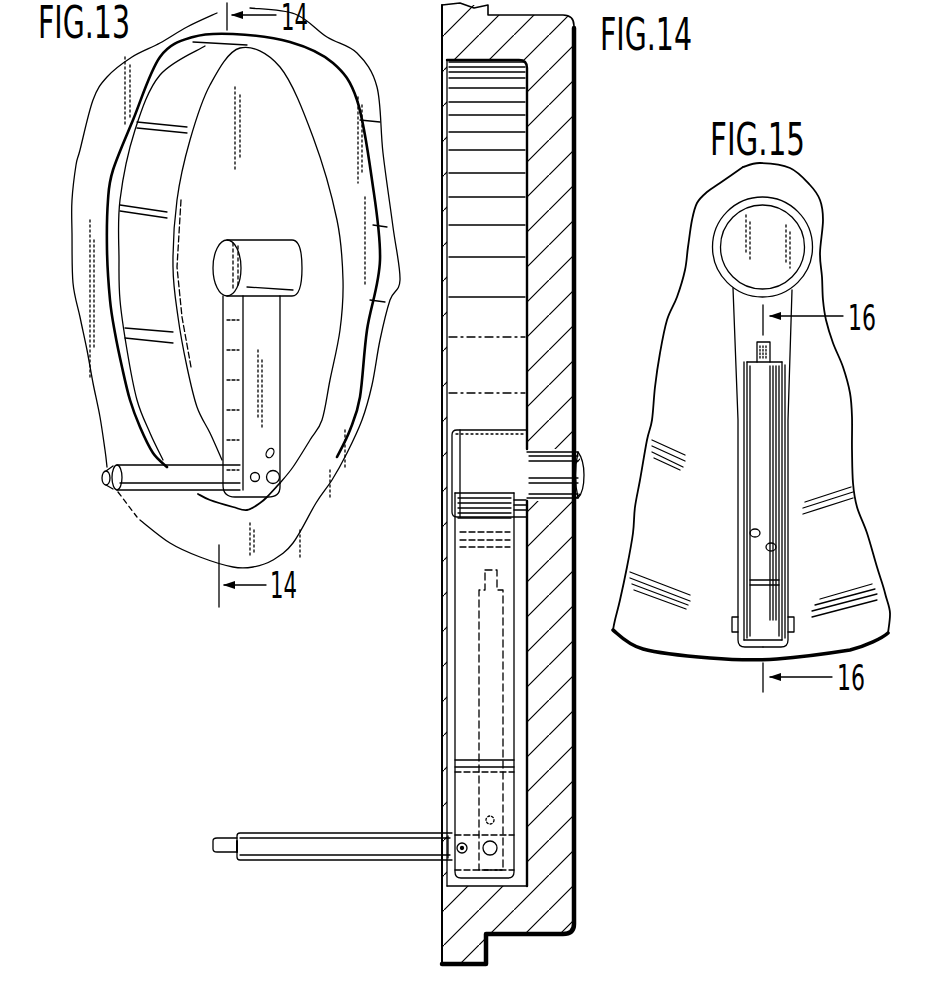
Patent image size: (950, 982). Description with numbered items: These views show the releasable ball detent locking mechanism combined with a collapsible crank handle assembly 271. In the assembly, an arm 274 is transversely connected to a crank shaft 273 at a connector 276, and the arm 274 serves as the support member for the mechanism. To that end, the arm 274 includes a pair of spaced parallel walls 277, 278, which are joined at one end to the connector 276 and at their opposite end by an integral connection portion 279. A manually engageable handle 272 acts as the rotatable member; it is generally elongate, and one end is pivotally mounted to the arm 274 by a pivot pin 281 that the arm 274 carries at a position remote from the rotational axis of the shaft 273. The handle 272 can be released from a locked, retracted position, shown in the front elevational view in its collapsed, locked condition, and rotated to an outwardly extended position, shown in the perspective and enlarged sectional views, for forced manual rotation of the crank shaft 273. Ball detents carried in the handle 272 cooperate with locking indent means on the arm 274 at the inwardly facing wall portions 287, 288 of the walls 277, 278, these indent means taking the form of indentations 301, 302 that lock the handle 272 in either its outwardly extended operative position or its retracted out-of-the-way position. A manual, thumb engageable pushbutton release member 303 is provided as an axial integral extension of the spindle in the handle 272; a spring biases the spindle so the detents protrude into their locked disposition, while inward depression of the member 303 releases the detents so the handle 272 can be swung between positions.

In FIG. 13, the collapsible crank handle assembly 271 is at (307, 346).
In FIG. 13, the manually engageable handle 272 is at (149, 498).
In FIG. 14, the manually engageable handle 272 is at (307, 855).
In FIG. 15, the manually engageable handle 272 is at (760, 487).
In FIG. 14, the crank shaft 273 is at (560, 466).
In FIG. 13, the arm 274 is at (262, 327).
In FIG. 14, the arm 274 is at (506, 685).
In FIG. 13, the connector 276 is at (256, 248).
In FIG. 14, the connector 276 is at (472, 448).
In FIG. 15, the connector 276 is at (740, 257).
In FIG. 15, the spaced parallel wall 277 is at (740, 400).
In FIG. 15, the spaced parallel wall 278 is at (788, 420).
In FIG. 14, the integral connection portion 279 is at (510, 880).
In FIG. 15, the integral connection portion 279 is at (748, 648).
In FIG. 14, the pivot pin 281 is at (497, 848).
In FIG. 15, the inwardly facing wall portion 287 is at (752, 533).
In FIG. 15, the inwardly facing wall portion 288 is at (775, 547).
In FIG. 14, the indentation 301 is at (447, 857).
In FIG. 14, the indentation 302 is at (487, 815).
In FIG. 13, the pushbutton release member 303 is at (104, 481).
In FIG. 14, the pushbutton release member 303 is at (215, 845).
In FIG. 15, the pushbutton release member 303 is at (757, 345).